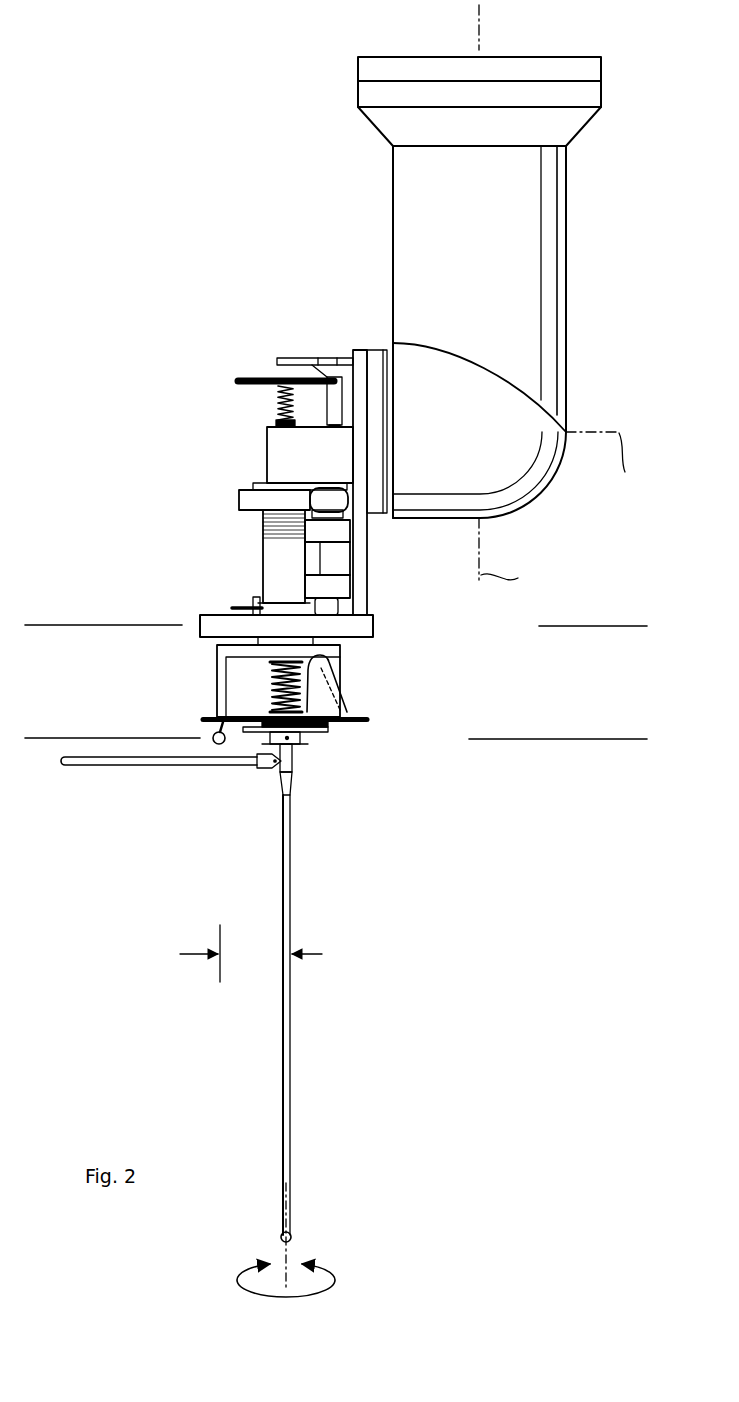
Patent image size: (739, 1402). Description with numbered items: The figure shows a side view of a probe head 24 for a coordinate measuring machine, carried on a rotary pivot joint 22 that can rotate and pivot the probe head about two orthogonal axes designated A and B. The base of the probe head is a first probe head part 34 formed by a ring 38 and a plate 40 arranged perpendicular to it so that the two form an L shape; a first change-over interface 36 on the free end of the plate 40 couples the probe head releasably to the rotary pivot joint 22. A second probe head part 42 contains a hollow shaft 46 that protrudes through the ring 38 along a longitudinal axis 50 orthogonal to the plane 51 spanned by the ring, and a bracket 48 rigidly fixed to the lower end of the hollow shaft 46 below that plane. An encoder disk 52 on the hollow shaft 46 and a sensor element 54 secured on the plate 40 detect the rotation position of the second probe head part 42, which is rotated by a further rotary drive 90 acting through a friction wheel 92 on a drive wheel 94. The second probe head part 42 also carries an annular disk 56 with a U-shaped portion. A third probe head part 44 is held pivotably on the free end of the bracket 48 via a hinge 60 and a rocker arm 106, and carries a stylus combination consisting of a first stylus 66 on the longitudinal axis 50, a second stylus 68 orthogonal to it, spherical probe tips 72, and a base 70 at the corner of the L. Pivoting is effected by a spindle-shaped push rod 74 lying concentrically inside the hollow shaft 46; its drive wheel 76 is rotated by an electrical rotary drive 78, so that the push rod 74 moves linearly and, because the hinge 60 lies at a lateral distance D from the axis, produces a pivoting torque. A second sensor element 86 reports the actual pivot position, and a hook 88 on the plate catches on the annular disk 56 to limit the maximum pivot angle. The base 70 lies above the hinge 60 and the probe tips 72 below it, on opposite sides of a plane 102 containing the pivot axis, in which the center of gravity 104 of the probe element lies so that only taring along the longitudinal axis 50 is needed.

The rotary pivot joint 22 is at (549, 229).
The probe head 24 is at (186, 268).
The first probe head part 34 is at (384, 606).
The first change-over interface 36 is at (352, 332).
The ring 38 is at (365, 624).
The plate 40 is at (361, 564).
The second probe head part 42 is at (204, 654).
The third probe head part 44 is at (328, 746).
The hollow shaft 46 is at (272, 545).
The bracket 48 is at (224, 678).
The longitudinal axis 50 is at (291, 1189).
The plane 51 is at (35, 628).
The encoder disk 52 is at (240, 607).
The sensor element 54 is at (256, 596).
The annular disk 56 is at (210, 718).
The hinge 60 is at (219, 745).
The first stylus 66 is at (291, 1074).
The second stylus 68 is at (122, 767).
The base 70 is at (330, 732).
The probe tip 72 is at (292, 1237).
The push rod 74 is at (277, 408).
The drive wheel 76 is at (250, 376).
The rotary drive 78 is at (329, 400).
The second sensor element 86 is at (345, 710).
The hook 88 is at (342, 657).
The further rotary drive 90 is at (353, 588).
The friction wheel 92 is at (350, 500).
The drive wheel 94 is at (247, 500).
The plane 102 is at (35, 741).
The center of gravity 104 is at (289, 741).
The rocker arm 106 is at (233, 727).